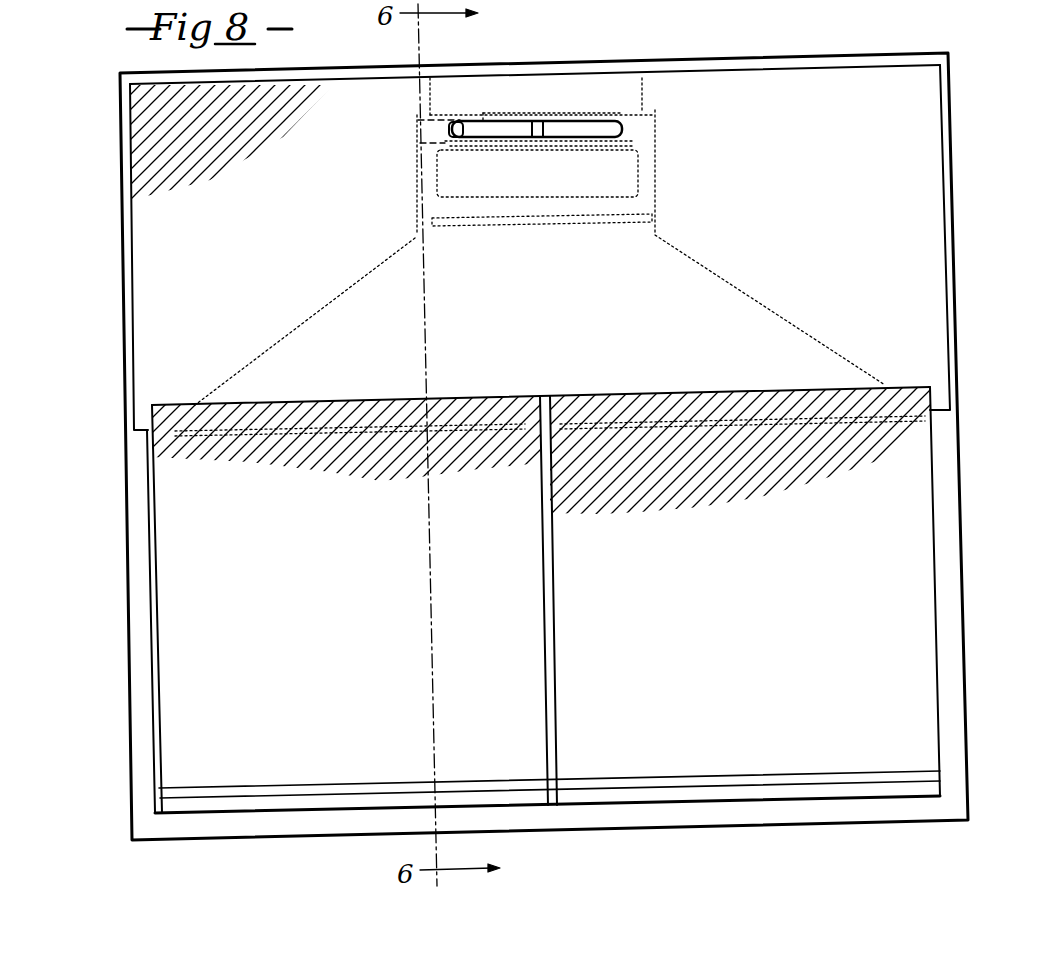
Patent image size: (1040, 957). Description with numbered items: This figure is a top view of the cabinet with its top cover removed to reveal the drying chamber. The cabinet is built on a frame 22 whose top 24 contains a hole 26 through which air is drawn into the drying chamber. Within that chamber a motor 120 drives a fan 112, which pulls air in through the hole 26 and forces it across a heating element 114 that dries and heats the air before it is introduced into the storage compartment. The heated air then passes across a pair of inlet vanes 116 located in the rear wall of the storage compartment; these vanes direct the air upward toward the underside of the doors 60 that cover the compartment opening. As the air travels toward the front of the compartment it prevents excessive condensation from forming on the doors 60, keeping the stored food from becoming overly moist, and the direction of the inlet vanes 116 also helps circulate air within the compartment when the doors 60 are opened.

The frame 22 is at (118, 292).
The top 24 is at (761, 160).
The hole 26 is at (597, 124).
The door 60 is at (152, 535).
The fan 112 is at (640, 181).
The heating element 114 is at (527, 223).
The inlet vanes 116 is at (373, 428).
The motor 120 is at (643, 90).